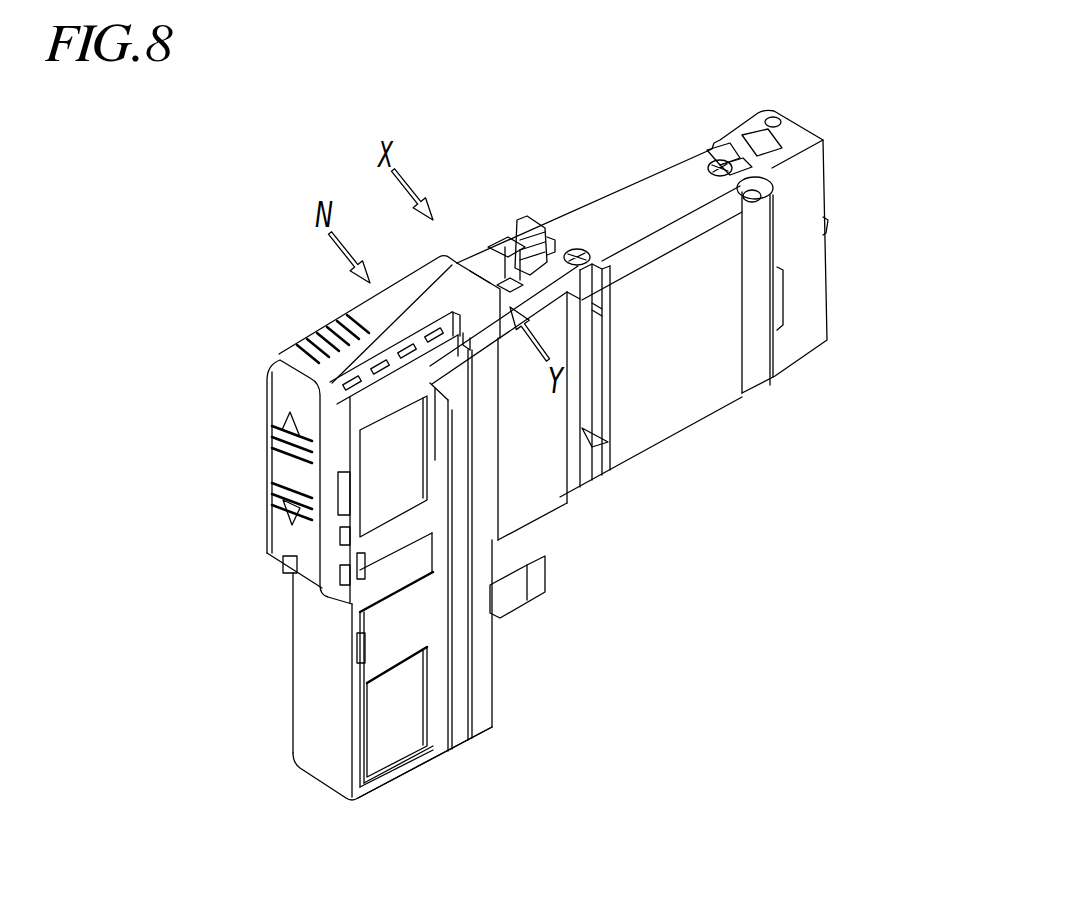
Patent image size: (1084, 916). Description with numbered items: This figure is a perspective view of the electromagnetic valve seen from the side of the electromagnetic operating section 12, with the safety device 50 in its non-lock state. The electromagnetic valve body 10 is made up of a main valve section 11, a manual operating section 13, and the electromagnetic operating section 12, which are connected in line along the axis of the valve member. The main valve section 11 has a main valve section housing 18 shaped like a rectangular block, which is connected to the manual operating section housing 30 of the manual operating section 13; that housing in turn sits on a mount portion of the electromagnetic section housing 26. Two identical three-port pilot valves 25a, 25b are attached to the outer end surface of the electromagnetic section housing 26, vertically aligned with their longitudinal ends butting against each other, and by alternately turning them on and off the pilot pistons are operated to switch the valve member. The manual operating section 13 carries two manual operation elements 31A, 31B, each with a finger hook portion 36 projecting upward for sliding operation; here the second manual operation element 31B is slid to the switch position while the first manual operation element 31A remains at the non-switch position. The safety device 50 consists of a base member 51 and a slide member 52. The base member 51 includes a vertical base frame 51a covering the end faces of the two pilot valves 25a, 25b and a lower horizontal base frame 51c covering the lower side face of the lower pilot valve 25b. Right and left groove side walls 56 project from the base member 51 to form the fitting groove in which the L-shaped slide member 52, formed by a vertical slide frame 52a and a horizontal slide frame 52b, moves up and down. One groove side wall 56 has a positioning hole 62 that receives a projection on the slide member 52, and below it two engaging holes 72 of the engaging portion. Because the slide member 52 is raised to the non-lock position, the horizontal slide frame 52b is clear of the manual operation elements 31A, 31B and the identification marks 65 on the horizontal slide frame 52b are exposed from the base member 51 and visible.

The electromagnetic valve body 10 is at (485, 441).
The main valve section 11 is at (642, 280).
The electromagnetic operating section 12 is at (437, 784).
The manual operating section 13 is at (588, 437).
The main valve section housing 18 is at (707, 383).
The pilot valve 25a is at (397, 487).
The pilot valve 25b is at (387, 730).
The electromagnetic section housing 26 is at (480, 675).
The manual operating section housing 30 is at (577, 490).
The manual operation element 31A is at (483, 263).
The manual operation element 31B is at (507, 238).
The finger hook portion 36 is at (530, 228).
The safety device 50 is at (363, 512).
The base member 51 is at (367, 604).
The vertical base frame 51a is at (315, 728).
The lower horizontal base frame 51c is at (387, 780).
The slide member 52 is at (301, 384).
The vertical slide frame 52a is at (247, 482).
The horizontal slide frame 52b is at (407, 267).
The groove side wall 56 is at (340, 437).
The positioning hole 62 is at (340, 503).
The identification mark 65 is at (402, 340).
The engaging hole 72 is at (333, 590).